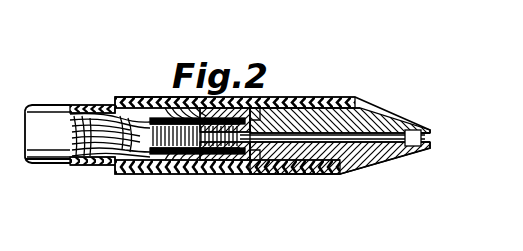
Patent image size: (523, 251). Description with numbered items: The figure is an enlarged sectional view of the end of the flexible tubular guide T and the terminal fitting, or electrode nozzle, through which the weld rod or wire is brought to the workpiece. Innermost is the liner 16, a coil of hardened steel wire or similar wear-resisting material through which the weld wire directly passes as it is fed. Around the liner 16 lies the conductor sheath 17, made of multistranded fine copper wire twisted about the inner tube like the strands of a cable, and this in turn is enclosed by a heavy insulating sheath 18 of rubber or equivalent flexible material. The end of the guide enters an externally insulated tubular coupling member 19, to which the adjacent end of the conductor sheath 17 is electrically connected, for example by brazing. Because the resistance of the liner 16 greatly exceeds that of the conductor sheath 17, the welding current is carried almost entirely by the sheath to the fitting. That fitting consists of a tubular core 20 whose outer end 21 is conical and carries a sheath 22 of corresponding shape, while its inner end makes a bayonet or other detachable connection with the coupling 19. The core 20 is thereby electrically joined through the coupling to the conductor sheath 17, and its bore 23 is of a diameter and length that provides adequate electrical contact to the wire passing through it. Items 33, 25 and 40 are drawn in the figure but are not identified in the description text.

The flexible tubular guide T is at (48, 105).
The conductor sheath 17 is at (84, 138).
The insulating sheath 18 is at (92, 118).
The outer sleeve 33 is at (122, 97).
The bore 23 is at (130, 175).
The retaining ring 25 is at (197, 172).
The liner 16 is at (223, 170).
The tubular coupling member 19 is at (257, 172).
The tubular core 20 is at (312, 172).
The outer end of core 21 is at (393, 116).
The sheath 22 is at (408, 158).
The pin bushing 40 is at (425, 138).